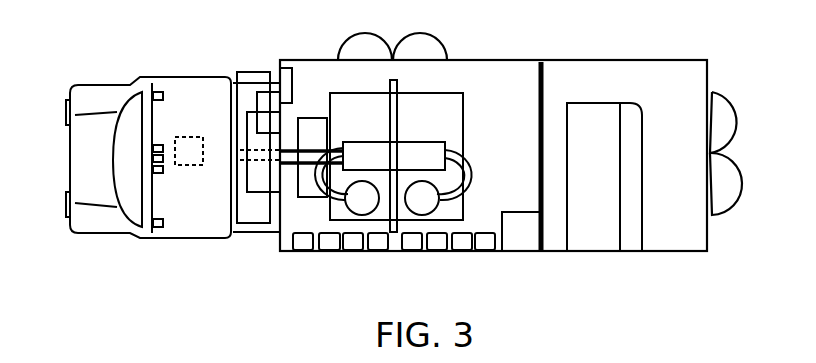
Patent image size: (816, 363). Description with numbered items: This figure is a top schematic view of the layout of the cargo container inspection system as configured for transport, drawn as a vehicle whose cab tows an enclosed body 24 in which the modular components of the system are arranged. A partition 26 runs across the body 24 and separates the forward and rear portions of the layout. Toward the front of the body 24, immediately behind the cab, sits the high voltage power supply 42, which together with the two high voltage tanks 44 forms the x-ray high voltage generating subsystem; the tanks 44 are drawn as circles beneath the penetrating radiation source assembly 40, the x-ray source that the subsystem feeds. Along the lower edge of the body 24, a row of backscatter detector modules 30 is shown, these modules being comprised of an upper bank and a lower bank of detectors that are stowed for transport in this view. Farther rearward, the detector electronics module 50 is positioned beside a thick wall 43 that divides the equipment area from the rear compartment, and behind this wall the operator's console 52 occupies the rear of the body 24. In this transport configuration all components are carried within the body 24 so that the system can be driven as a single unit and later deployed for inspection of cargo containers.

The vehicle body enclosure 24 is at (479, 60).
The partition wall 26 is at (398, 88).
The backscatter detector modules 30 is at (327, 252).
The penetrating radiation source assembly 40 is at (361, 150).
The high voltage power supply 42 is at (311, 122).
The shielding wall 43 is at (545, 87).
The high voltage tanks 44 is at (352, 207).
The detector electronics module 50 is at (513, 212).
The operator's console 52 is at (605, 112).